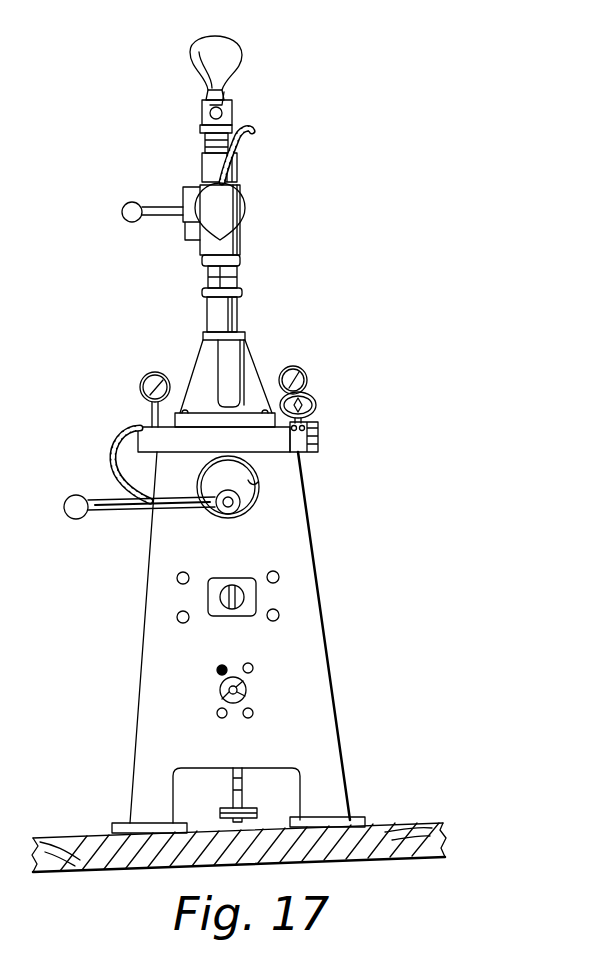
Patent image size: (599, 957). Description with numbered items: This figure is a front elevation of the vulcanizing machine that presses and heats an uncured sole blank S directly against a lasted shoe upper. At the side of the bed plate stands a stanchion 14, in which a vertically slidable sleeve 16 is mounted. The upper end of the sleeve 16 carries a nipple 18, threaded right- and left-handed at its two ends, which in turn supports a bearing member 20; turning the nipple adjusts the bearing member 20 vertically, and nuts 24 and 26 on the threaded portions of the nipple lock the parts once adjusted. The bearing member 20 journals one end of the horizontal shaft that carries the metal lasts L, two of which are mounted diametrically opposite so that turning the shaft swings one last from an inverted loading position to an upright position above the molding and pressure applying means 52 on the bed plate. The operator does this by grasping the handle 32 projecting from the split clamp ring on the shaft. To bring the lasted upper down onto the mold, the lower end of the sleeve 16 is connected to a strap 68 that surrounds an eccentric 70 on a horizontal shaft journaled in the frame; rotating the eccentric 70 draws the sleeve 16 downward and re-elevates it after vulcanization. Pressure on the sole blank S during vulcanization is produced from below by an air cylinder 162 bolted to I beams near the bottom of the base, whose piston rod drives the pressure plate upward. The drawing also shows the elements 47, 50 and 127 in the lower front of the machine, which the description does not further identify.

The metal last L is at (217, 46).
The handle 32 is at (153, 207).
The bearing member 20 is at (235, 210).
The nut 26 is at (202, 258).
The nipple 18 is at (238, 277).
The nut 24 is at (203, 293).
The sleeve 16 is at (237, 313).
The stanchion 14 is at (250, 347).
The molding and pressure applying means 52 is at (303, 450).
The eccentric 70 is at (247, 489).
The strap 68 is at (255, 512).
The operating lever 47 is at (130, 512).
The uncured sole blank S is at (225, 580).
The cabinet 50 is at (332, 673).
The dial 127 is at (247, 690).
The air cylinder 162 is at (228, 810).